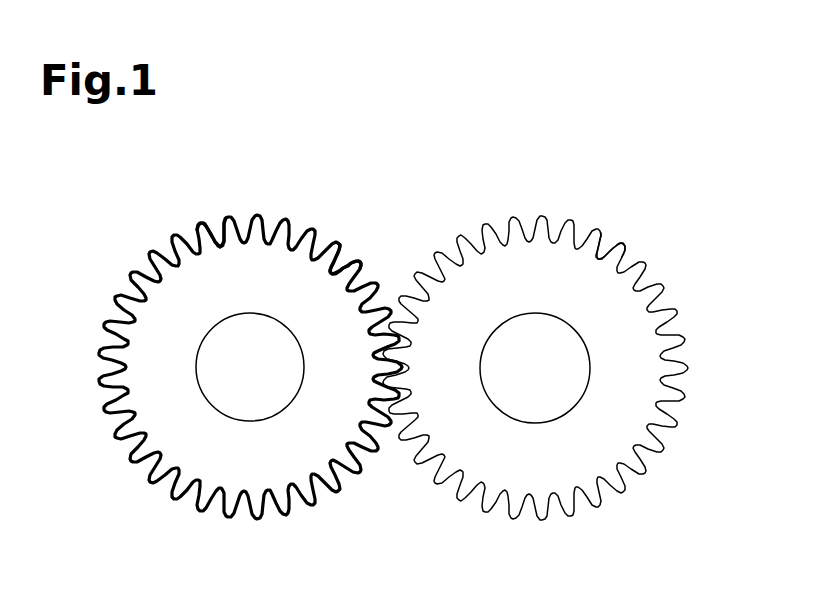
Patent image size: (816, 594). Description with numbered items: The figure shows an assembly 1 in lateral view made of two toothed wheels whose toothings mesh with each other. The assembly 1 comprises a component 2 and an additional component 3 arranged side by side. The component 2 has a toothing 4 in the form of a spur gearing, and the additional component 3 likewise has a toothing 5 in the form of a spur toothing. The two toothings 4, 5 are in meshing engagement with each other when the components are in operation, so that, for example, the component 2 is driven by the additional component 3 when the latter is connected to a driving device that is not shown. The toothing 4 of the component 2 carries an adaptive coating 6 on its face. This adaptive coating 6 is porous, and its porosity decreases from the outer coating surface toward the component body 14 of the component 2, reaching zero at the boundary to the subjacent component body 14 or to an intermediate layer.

The assembly 1 is at (422, 272).
The component 2 is at (313, 192).
The additional component 3 is at (678, 278).
The toothing 4 is at (348, 258).
The toothing 5 is at (613, 242).
The adaptive coating 6 is at (218, 220).
The component body 14 is at (207, 327).